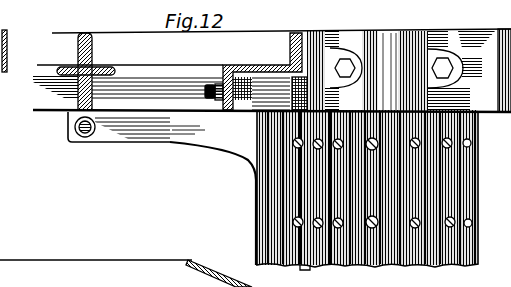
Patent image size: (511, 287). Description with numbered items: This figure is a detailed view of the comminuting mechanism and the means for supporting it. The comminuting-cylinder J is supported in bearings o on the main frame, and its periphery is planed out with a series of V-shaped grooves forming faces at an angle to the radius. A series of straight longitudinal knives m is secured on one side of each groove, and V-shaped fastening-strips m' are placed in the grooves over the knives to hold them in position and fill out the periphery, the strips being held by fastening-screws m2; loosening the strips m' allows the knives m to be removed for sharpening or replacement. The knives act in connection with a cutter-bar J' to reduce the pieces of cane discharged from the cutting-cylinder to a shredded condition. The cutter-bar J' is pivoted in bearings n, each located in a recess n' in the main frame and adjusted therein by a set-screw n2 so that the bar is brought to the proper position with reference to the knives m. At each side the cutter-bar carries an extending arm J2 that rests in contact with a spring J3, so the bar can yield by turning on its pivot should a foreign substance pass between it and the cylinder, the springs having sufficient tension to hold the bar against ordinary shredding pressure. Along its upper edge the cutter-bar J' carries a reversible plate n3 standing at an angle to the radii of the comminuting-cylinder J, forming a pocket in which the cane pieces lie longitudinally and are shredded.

The set-screw n2 is at (212, 86).
The recess n' is at (262, 71).
The bearing n is at (261, 93).
The spring J3 is at (85, 136).
The extending arm J2 is at (165, 143).
The cutter-bar J' is at (349, 188).
The plate n3 is at (307, 264).
The V-shaped fastening-strip m' is at (382, 155).
The fastening-screw m2 is at (372, 229).
The longitudinal knife m is at (382, 234).
The bearing o is at (388, 71).
The comminuting-cylinder J is at (500, 128).